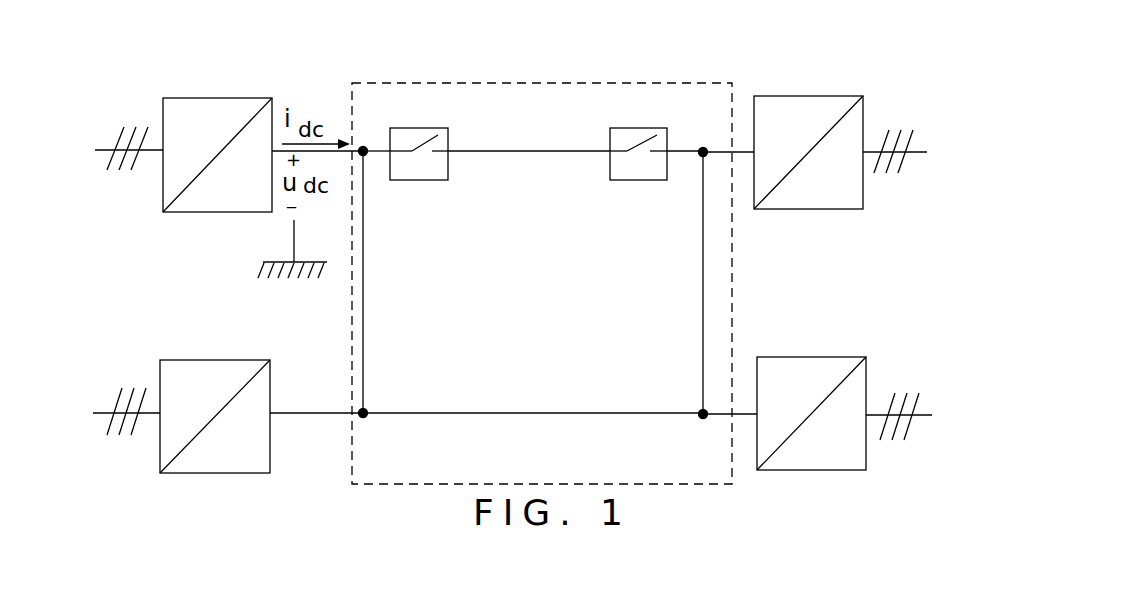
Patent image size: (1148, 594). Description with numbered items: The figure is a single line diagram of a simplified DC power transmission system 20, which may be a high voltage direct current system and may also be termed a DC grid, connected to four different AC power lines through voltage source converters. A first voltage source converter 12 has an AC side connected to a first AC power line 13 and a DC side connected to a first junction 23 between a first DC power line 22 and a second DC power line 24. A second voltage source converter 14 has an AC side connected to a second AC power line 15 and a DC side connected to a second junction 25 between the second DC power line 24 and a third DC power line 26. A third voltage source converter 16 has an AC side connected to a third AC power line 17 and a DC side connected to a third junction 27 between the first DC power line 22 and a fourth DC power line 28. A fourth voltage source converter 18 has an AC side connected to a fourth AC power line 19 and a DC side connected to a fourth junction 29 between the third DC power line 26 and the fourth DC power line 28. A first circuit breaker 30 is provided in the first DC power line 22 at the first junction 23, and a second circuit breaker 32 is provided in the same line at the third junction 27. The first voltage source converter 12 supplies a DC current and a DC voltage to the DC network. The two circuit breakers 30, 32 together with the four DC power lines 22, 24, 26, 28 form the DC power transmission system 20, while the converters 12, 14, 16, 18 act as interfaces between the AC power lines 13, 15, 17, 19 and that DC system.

The first voltage source converter 12 is at (223, 98).
The first AC power line 13 is at (103, 150).
The second voltage source converter 14 is at (233, 360).
The second AC power line 15 is at (152, 412).
The third voltage source converter 16 is at (795, 97).
The third AC power line 17 is at (873, 150).
The fourth voltage source converter 18 is at (800, 357).
The fourth AC power line 19 is at (923, 417).
The DC power transmission system 20 is at (558, 87).
The first DC power line 22 is at (520, 152).
The first junction 23 is at (365, 153).
The second DC power line 24 is at (364, 283).
The second junction 25 is at (365, 412).
The third DC power line 26 is at (532, 415).
The third junction 27 is at (700, 157).
The fourth DC power line 28 is at (703, 237).
The fourth junction 29 is at (702, 412).
The first circuit breaker 30 is at (440, 110).
The second circuit breaker 32 is at (630, 130).